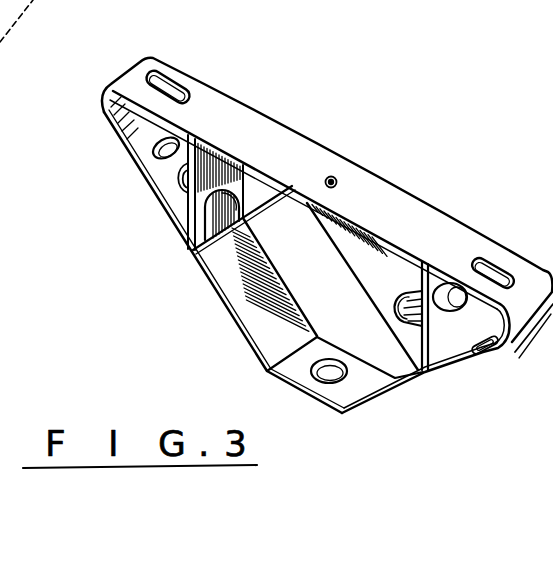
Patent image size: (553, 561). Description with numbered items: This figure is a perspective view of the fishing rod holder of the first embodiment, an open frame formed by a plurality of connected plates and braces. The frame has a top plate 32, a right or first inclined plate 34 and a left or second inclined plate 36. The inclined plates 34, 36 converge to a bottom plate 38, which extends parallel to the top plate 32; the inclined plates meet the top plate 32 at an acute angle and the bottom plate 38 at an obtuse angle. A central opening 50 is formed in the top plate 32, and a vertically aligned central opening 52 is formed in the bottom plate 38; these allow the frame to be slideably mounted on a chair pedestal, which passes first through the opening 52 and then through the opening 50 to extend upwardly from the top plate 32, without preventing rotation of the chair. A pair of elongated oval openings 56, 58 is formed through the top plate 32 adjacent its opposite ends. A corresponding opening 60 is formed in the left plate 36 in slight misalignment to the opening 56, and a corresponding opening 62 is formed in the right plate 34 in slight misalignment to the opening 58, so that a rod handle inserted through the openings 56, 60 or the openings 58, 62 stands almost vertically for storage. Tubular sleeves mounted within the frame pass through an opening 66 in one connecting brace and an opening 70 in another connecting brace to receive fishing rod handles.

The top plate 32 is at (245, 127).
The first inclined plate 34 is at (437, 380).
The second inclined plate 36 is at (224, 264).
The bottom plate 38 is at (346, 392).
The central opening 50 is at (333, 180).
The central opening 52 is at (312, 381).
The elongated oval opening 56 is at (172, 85).
The elongated oval opening 58 is at (490, 270).
The opening 60 is at (166, 160).
The opening 62 is at (479, 350).
The opening 66 is at (454, 312).
The opening 70 is at (217, 210).